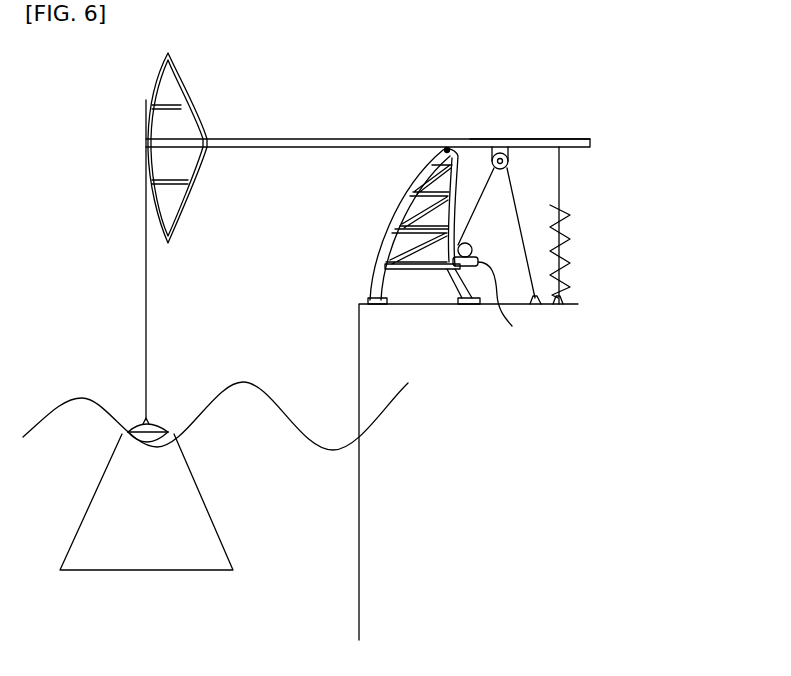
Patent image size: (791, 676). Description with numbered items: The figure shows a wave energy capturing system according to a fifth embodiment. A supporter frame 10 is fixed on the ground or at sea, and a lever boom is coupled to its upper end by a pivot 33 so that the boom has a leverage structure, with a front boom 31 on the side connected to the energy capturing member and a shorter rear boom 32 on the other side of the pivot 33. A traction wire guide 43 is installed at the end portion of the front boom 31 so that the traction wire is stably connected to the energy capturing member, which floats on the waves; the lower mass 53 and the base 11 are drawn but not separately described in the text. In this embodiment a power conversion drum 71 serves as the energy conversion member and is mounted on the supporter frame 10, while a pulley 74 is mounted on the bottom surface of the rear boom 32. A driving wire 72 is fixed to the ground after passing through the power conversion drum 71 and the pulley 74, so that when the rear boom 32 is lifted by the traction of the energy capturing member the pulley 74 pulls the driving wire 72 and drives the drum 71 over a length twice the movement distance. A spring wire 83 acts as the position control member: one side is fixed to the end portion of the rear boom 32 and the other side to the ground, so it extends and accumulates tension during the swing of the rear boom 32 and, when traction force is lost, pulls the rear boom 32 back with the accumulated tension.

The supporter frame 10 is at (376, 244).
The slider block 11 is at (507, 310).
The front boom 31 is at (325, 139).
The rear boom 32 is at (481, 138).
The pivot 33 is at (447, 148).
The traction wire guide 43 is at (176, 78).
The float weight 53 is at (143, 565).
The power conversion drum 71 is at (473, 241).
The driving wire 72 is at (517, 187).
The pulley 74 is at (500, 150).
The spring wire 83 is at (576, 258).